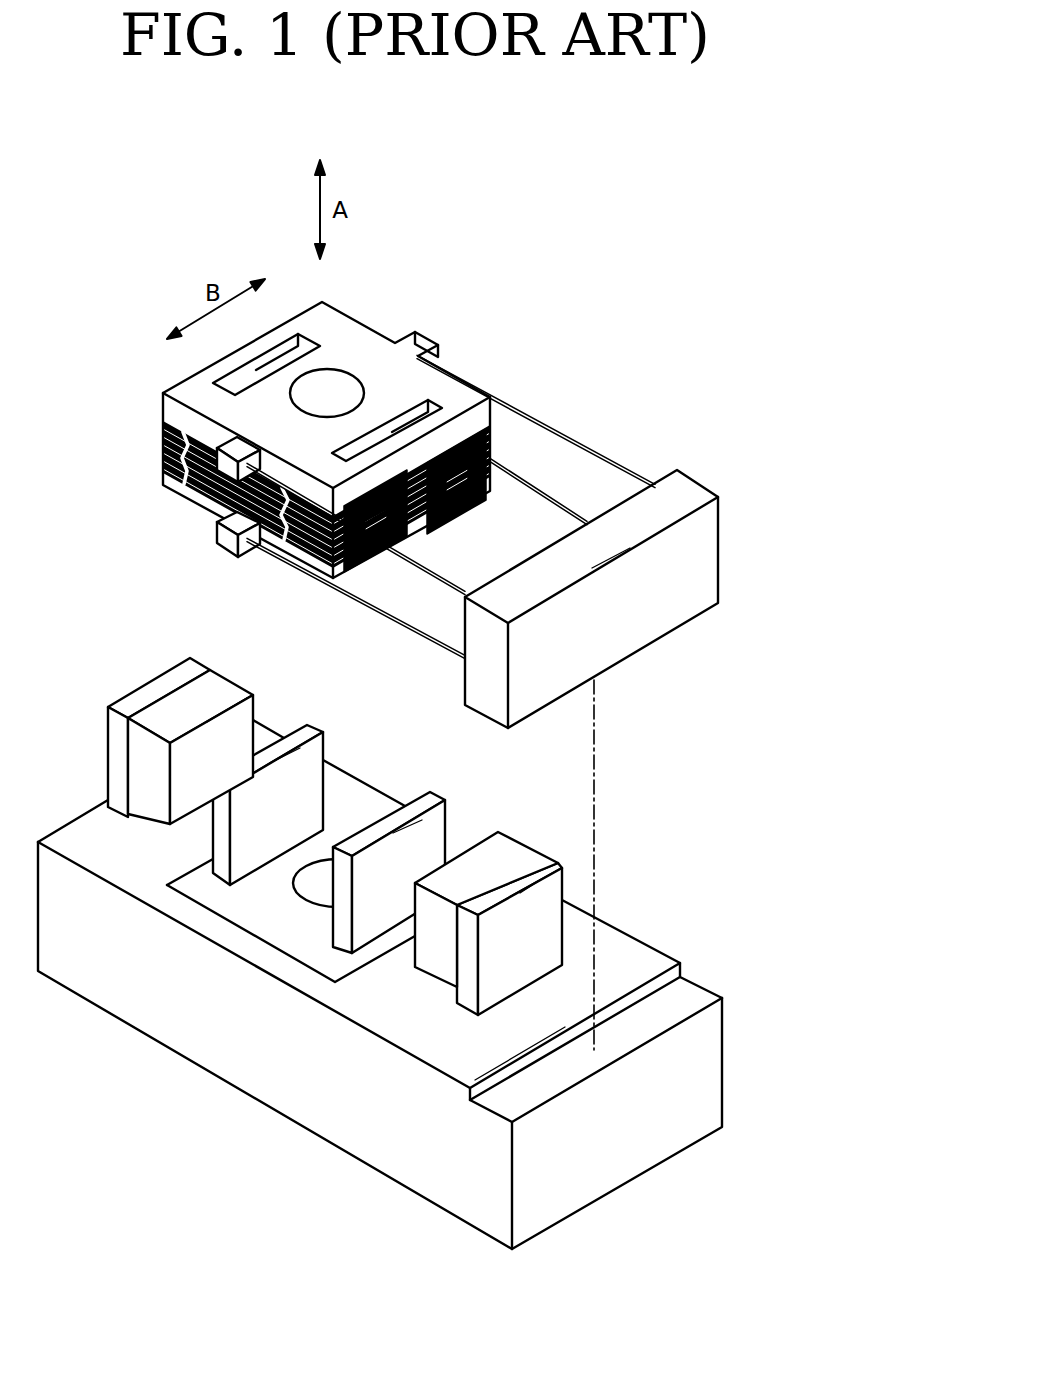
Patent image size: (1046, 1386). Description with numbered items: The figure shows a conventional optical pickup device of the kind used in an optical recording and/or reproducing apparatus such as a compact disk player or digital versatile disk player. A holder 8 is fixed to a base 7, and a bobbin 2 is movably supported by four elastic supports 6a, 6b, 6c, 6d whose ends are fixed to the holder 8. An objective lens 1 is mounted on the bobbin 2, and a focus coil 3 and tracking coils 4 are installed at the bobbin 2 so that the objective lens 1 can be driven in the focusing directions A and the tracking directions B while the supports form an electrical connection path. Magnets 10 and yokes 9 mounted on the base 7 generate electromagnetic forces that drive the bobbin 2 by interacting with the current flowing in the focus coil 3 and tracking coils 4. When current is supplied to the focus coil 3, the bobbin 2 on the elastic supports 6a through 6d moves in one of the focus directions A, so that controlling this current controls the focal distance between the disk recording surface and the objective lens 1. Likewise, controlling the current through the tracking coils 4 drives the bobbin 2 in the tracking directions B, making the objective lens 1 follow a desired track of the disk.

The objective lens 1 is at (332, 385).
The bobbin 2 is at (313, 313).
The focus coil 3 is at (188, 468).
The tracking coils 4 is at (467, 505).
The elastic support 6a is at (440, 578).
The elastic support 6b is at (380, 612).
The elastic support 6c is at (633, 470).
The elastic support 6d is at (557, 493).
The base 7 is at (635, 958).
The holder 8 is at (697, 593).
The yokes 9 is at (117, 748).
The magnets 10 is at (225, 695).